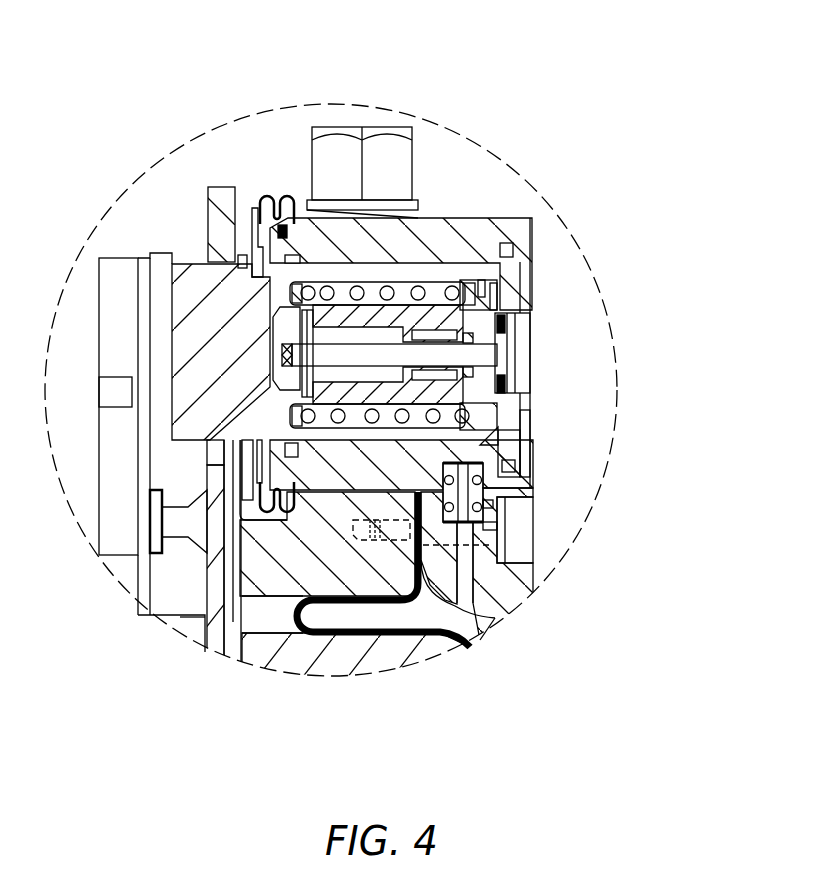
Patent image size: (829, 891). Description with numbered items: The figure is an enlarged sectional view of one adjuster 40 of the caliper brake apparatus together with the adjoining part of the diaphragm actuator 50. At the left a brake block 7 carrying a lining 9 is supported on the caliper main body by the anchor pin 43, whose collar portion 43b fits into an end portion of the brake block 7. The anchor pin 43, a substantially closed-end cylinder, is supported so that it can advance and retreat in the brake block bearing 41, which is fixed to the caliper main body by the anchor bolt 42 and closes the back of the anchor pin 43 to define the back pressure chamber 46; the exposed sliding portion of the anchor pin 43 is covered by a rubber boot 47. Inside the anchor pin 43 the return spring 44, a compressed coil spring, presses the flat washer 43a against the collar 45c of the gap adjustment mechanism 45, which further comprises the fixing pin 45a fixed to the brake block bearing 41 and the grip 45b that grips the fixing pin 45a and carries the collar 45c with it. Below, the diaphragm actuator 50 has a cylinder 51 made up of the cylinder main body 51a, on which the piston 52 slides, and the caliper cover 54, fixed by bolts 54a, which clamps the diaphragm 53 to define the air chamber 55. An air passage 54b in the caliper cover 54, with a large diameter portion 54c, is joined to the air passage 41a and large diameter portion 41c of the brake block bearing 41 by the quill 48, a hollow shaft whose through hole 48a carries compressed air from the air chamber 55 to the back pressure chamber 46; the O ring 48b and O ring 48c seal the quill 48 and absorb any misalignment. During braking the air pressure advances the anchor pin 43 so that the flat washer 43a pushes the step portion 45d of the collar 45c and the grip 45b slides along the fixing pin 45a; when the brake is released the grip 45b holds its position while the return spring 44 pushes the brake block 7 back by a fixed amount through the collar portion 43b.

The brake block 7 is at (133, 612).
The lining 9 is at (122, 553).
The adjuster 40 is at (514, 193).
The brake block bearing 41 is at (307, 220).
The air passage 41a is at (478, 462).
The large diameter portion 41c is at (520, 458).
The anchor bolt 42 is at (325, 143).
The anchor pin 43 is at (192, 282).
The flat washer 43a is at (470, 283).
The collar portion 43b is at (206, 224).
The return spring 44 is at (387, 290).
The gap adjustment mechanism 45 is at (517, 376).
The fixing pin 45a is at (470, 357).
The grip 45b is at (445, 337).
The collar 45c is at (403, 312).
The step portion 45d is at (425, 300).
The back pressure chamber 46 is at (493, 290).
The rubber boot 47 is at (268, 195).
The quill 48 is at (480, 507).
The through hole 48a is at (493, 528).
The O ring 48b is at (530, 473).
The O ring 48c is at (493, 508).
The diaphragm actuator 50 is at (488, 647).
The cylinder 51 is at (510, 623).
The cylinder main body 51a is at (262, 590).
The piston 52 is at (317, 610).
The diaphragm 53 is at (383, 637).
The caliper cover 54 is at (517, 580).
The bolt 54a is at (465, 565).
The air passage 54b is at (510, 598).
The large diameter portion 54c is at (523, 547).
The air chamber 55 is at (420, 610).